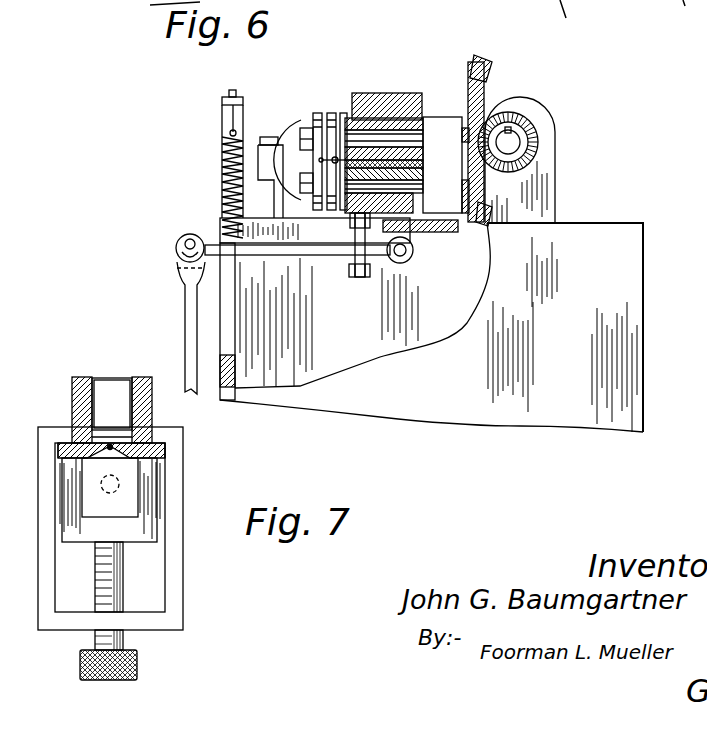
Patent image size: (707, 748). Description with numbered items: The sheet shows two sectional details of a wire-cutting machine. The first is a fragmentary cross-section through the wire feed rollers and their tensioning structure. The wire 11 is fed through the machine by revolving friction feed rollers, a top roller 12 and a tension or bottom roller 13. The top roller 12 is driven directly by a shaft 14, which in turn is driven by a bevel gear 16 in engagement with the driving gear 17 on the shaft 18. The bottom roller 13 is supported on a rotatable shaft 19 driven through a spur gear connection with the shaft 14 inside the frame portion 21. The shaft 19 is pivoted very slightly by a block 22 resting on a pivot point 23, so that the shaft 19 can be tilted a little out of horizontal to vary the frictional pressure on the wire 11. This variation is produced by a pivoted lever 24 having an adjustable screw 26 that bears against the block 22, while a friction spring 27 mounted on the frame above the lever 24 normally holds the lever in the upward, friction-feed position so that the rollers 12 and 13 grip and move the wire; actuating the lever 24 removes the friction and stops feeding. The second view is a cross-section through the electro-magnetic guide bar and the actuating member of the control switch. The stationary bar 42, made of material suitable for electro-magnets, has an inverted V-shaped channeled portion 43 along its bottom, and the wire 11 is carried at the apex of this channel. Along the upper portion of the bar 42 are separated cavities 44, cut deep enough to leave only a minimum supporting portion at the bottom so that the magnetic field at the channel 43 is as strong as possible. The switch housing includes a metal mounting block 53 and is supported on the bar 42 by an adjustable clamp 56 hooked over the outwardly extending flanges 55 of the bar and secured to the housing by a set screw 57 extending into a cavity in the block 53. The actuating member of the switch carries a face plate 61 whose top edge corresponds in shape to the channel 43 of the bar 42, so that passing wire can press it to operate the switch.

In FIG. 6, the wire 11 is at (323, 160).
In FIG. 6, the top feed roller 12 is at (337, 118).
In FIG. 6, the tension or bottom roller 13 is at (336, 207).
In FIG. 6, the shaft 14 is at (421, 140).
In FIG. 6, the bevel gear 16 is at (482, 88).
In FIG. 6, the driving gear 17 is at (544, 142).
In FIG. 6, the shaft 18 is at (519, 138).
In FIG. 6, the rotatable shaft 19 is at (421, 190).
In FIG. 6, the frame portion 21 is at (452, 182).
In FIG. 6, the block 22 is at (414, 240).
In FIG. 6, the pivot point 23 is at (435, 232).
In FIG. 6, the pivoted lever 24 is at (287, 255).
In FIG. 6, the adjustable screw 26 is at (358, 278).
In FIG. 6, the friction spring 27 is at (225, 176).
In FIG. 7, the stationary bar 42 is at (80, 368).
In FIG. 7, the inverted V-shaped channeled portion 43 is at (127, 452).
In FIG. 7, the cavities 44 is at (130, 390).
In FIG. 7, the metal mounting block 53 is at (148, 498).
In FIG. 7, the outwardly extending flanges 55 is at (65, 440).
In FIG. 7, the adjustable clamp 56 is at (189, 561).
In FIG. 7, the set screw 57 is at (137, 658).
In FIG. 7, the face plate 61 is at (125, 482).